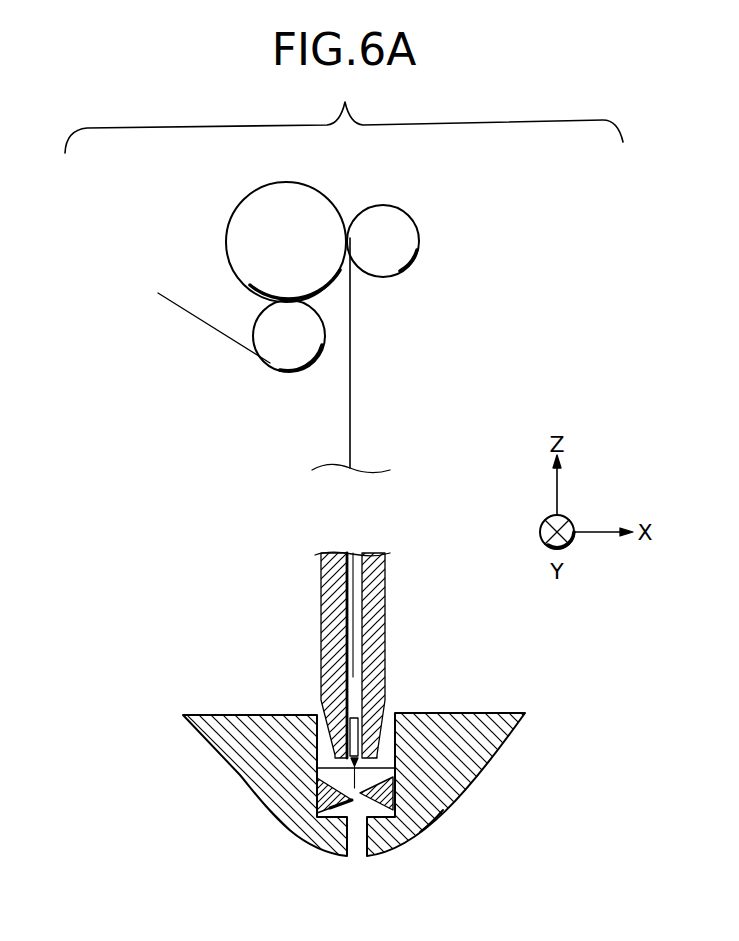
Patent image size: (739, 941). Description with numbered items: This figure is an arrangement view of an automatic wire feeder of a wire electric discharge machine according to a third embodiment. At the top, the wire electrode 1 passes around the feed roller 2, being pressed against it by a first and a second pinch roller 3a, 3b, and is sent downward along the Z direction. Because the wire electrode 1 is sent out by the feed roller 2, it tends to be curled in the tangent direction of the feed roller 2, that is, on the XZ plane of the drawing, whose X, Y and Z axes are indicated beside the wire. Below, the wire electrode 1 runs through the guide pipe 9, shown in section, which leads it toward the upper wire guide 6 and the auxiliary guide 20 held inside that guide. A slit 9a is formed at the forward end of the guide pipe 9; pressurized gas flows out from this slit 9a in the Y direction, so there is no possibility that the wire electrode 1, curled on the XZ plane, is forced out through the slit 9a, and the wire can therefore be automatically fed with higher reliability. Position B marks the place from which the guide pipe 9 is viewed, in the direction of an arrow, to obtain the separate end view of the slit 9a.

The wire electrode 1 is at (350, 392).
The feed roller 2 is at (257, 202).
The first pinch roller 3a is at (282, 362).
The second pinch roller 3b is at (397, 218).
The upper wire guide 6 is at (490, 710).
The guide pipe 9 is at (383, 583).
The slit 9a is at (356, 718).
The auxiliary guide 20 is at (323, 793).
The viewing position B is at (433, 817).